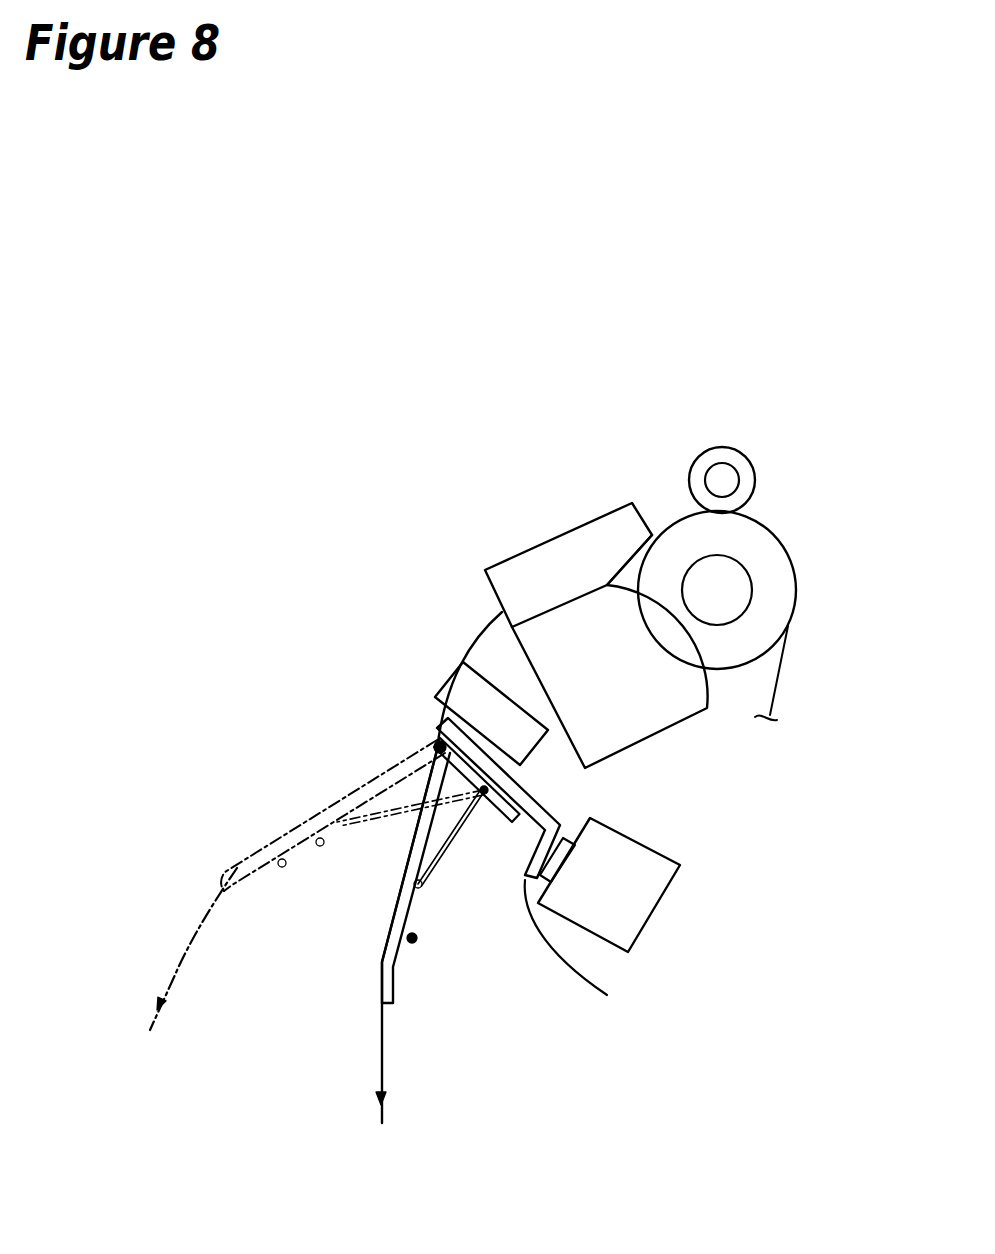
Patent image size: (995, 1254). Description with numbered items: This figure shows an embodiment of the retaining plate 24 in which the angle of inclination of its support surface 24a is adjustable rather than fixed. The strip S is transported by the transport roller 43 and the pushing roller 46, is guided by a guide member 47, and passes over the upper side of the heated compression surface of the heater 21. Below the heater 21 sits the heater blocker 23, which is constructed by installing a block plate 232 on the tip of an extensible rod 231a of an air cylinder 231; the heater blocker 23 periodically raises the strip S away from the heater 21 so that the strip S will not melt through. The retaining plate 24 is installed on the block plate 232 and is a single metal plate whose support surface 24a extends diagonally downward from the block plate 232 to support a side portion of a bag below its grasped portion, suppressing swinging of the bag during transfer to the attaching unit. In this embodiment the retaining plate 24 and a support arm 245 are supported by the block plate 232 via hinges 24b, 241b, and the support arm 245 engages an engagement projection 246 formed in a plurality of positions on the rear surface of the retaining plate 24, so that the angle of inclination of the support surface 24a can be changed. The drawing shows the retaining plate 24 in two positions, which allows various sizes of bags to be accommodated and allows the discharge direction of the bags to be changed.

The strip S is at (178, 968).
The transport roller 43 is at (787, 545).
The pushing roller 46 is at (755, 478).
The guide member 47 is at (535, 547).
The heater 21 is at (495, 676).
The hinge 241b is at (484, 790).
The heater blocker 23 is at (643, 920).
The air cylinder 231 is at (660, 905).
The extensible rod 231a is at (567, 840).
The block plate 232 is at (583, 954).
The retaining plate 24 is at (344, 893).
The support surface 24a is at (258, 847).
The hinge 24b is at (438, 742).
The support arm 245 is at (340, 822).
The engagement projection 246 is at (319, 848).